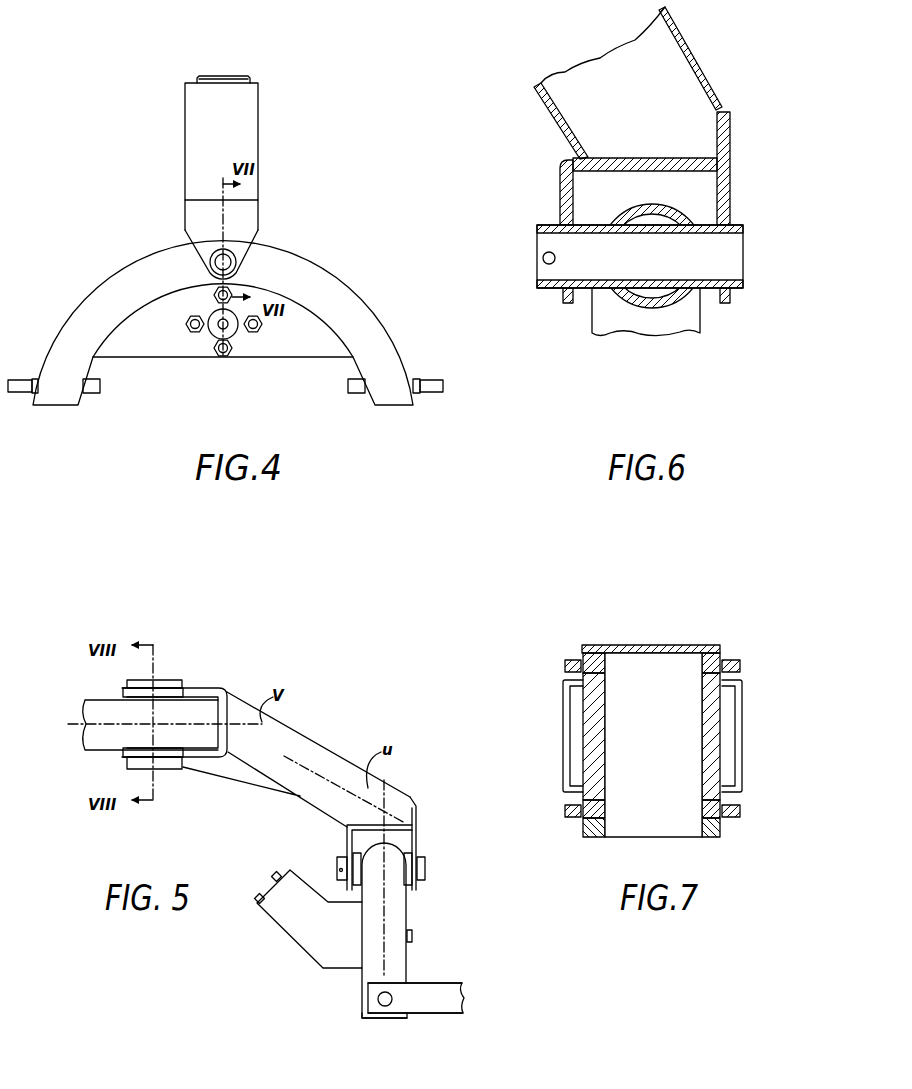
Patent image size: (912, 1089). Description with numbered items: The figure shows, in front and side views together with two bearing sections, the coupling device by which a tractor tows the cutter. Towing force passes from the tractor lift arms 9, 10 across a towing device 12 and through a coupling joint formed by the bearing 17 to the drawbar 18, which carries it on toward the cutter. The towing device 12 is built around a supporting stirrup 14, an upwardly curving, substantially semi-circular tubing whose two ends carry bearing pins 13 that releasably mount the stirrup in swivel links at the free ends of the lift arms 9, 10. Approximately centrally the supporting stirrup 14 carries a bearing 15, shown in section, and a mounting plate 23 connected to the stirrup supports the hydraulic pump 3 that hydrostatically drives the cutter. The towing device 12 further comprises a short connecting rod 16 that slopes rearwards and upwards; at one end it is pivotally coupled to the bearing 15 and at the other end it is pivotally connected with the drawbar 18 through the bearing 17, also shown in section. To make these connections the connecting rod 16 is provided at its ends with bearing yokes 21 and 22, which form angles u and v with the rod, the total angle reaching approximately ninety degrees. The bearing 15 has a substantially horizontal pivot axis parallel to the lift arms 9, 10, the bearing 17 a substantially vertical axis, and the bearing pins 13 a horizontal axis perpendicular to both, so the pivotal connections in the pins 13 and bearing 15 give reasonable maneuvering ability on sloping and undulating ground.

In FIG. 5, the hydraulic pump 3 is at (325, 948).
In FIG. 5, the lift arm 9 is at (448, 987).
In FIG. 5, the lift arm 10 is at (415, 998).
In FIG. 4, the towing device 12 is at (245, 140).
In FIG. 5, the towing device 12 is at (283, 742).
In FIG. 4, the bearing pin 13 is at (423, 384).
In FIG. 5, the bearing pin 13 is at (377, 1002).
In FIG. 4, the supporting stirrup 14 is at (341, 289).
In FIG. 6, the supporting stirrup 14 is at (637, 322).
In FIG. 5, the supporting stirrup 14 is at (397, 912).
In FIG. 4, the bearing 15 is at (236, 256).
In FIG. 6, the bearing 15 is at (575, 260).
In FIG. 5, the bearing 15 is at (424, 870).
In FIG. 4, the short connecting rod 16 is at (258, 104).
In FIG. 6, the short connecting rod 16 is at (570, 99).
In FIG. 5, the short connecting rod 16 is at (372, 790).
In FIG. 7, the bearing 17 is at (645, 746).
In FIG. 5, the bearing 17 is at (175, 683).
In FIG. 7, the drawbar 18 is at (565, 738).
In FIG. 4, the bearing yoke 21 is at (247, 217).
In FIG. 6, the bearing yoke 21 is at (716, 142).
In FIG. 5, the bearing yoke 21 is at (418, 841).
In FIG. 7, the bearing yoke 22 is at (728, 660).
In FIG. 5, the bearing yoke 22 is at (232, 690).
In FIG. 4, the mounting plate 23 is at (277, 343).